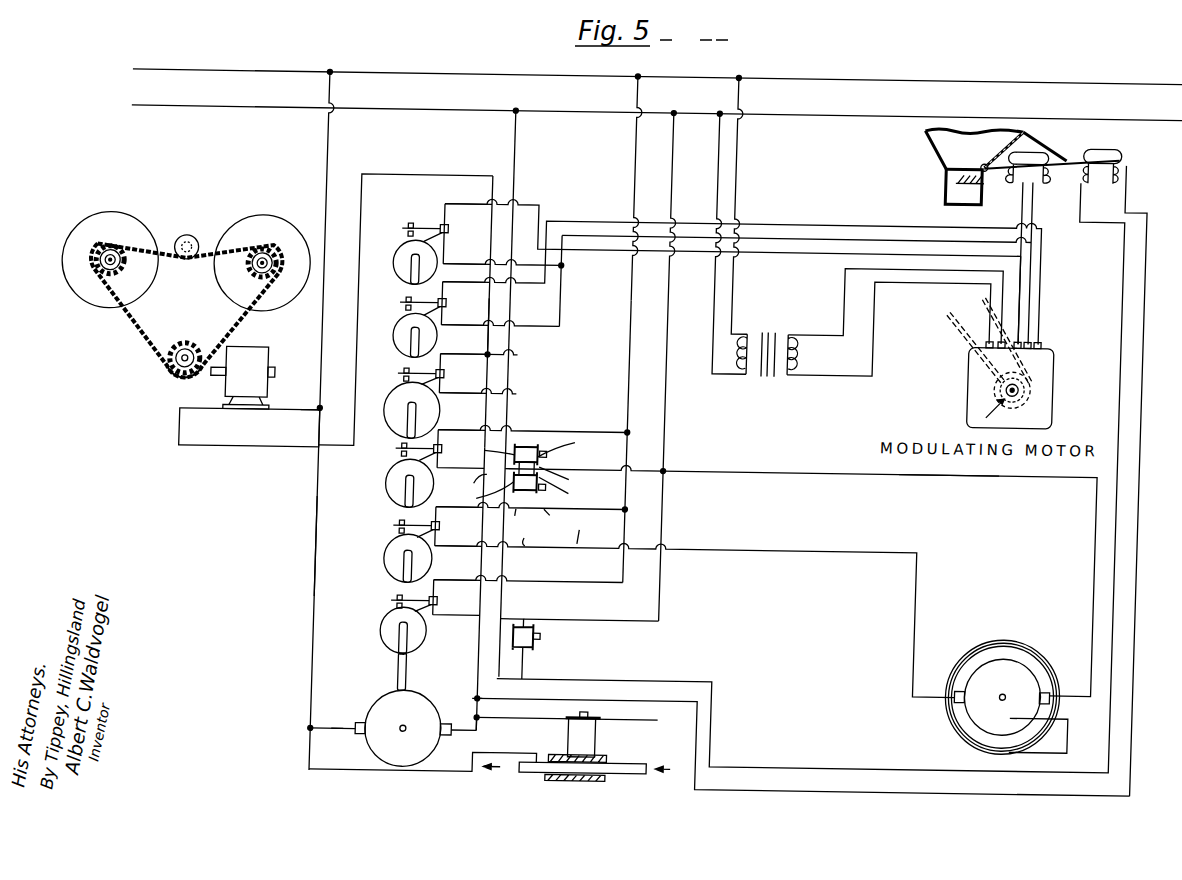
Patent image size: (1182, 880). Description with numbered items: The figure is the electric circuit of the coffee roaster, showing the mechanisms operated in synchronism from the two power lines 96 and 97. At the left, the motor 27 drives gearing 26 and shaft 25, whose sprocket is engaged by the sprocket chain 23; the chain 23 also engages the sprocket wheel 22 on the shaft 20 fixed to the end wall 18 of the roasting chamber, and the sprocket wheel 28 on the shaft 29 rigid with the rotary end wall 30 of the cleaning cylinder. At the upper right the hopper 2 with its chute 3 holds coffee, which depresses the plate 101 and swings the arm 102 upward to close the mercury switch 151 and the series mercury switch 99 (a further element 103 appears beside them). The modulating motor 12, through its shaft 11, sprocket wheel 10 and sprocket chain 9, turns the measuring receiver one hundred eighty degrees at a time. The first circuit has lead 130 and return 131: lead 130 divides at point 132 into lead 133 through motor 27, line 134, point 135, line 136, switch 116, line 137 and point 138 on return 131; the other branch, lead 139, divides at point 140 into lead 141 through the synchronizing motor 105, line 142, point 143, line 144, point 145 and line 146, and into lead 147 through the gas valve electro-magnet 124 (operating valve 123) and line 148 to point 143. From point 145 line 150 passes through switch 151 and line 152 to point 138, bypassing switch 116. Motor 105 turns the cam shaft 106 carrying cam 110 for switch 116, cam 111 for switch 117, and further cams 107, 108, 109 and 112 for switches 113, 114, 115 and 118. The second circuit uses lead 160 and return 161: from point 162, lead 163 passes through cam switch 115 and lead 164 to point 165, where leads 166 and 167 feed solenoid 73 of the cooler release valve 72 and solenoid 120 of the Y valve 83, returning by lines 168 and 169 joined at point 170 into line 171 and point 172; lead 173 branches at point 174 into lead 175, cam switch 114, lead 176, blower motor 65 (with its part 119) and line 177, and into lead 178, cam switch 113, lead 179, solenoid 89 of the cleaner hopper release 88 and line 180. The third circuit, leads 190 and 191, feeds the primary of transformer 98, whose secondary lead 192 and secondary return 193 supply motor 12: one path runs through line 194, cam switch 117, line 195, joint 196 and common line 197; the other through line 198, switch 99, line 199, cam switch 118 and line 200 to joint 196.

The hopper 2 is at (925, 138).
The chute 3 is at (944, 188).
The sprocket chain 9 is at (954, 326).
The sprocket wheel 10 is at (1005, 372).
The shaft 11 is at (992, 413).
The modulating motor 12 is at (1052, 381).
The end wall 18 is at (292, 292).
The shaft 20 is at (266, 255).
The sprocket wheel 22 is at (256, 272).
The sprocket chain 23 is at (244, 318).
The shaft 25 is at (168, 362).
The gearing 26 is at (180, 372).
The motor 27 is at (262, 358).
The sprocket wheel 28 is at (123, 268).
The shaft 29 is at (100, 270).
The rotary end wall 30 is at (68, 268).
The blower motor 65 is at (1018, 658).
The valve 72 is at (545, 442).
The solenoid 73 is at (523, 444).
The Y valve 83 is at (545, 485).
The release 88 is at (548, 639).
The solenoid 89 is at (527, 652).
The power line 96 is at (278, 72).
The power line 97 is at (287, 107).
The transformer 98 is at (768, 376).
The mercury switch 99 is at (1046, 146).
The plate 101 is at (960, 174).
The arm 102 is at (992, 172).
The solenoid 103 is at (1040, 178).
The motor 105 is at (386, 707).
The cam shaft 106 is at (416, 673).
The relay 107 is at (390, 635).
The relay 108 is at (391, 562).
The relay 109 is at (392, 485).
The cam 110 is at (390, 390).
The cam 111 is at (392, 325).
The relay 112 is at (392, 262).
The cam switch 113 is at (398, 602).
The cam switch 114 is at (398, 527).
The cam switch 115 is at (398, 452).
The switch 116 is at (400, 373).
The cam switch 117 is at (398, 302).
The cam switch 118 is at (408, 225).
The motor armature 119 is at (1040, 683).
The solenoid 120 is at (557, 518).
The valve 123 is at (610, 780).
The electro-magnet 124 is at (606, 735).
The lead 130 is at (324, 160).
The return 131 is at (518, 135).
The point 132 is at (322, 407).
The lead 133 is at (297, 411).
The line 134 is at (406, 176).
The point 135 is at (510, 355).
The line 136 is at (483, 347).
The line 137 is at (482, 390).
The point 138 is at (512, 394).
The lead 139 is at (316, 545).
The point 140 is at (312, 729).
The lead 141 is at (342, 734).
The line 142 is at (458, 736).
The point 143 is at (482, 724).
The line 144 is at (488, 718).
The point 145 is at (474, 700).
The line 146 is at (480, 642).
The lead 147 is at (312, 771).
The line 148 is at (556, 704).
The line 150 is at (616, 694).
The mercury switch 151 is at (1105, 143).
The line 152 is at (522, 676).
The lead 160 is at (634, 172).
The return 161 is at (673, 180).
The point 162 is at (628, 428).
The lead 163 is at (606, 428).
The lead 164 is at (467, 485).
The point 165 is at (480, 496).
The lead 166 is at (488, 454).
The lead 167 is at (520, 518).
The line 168 is at (566, 445).
The line 169 is at (568, 491).
The point 170 is at (567, 478).
The line 171 is at (594, 470).
The point 172 is at (668, 471).
The lead 173 is at (628, 485).
The point 174 is at (630, 512).
The lead 175 is at (592, 530).
The lead 176 is at (538, 539).
The line 177 is at (944, 474).
The lead 178 is at (613, 580).
The lead 179 is at (503, 618).
The line 180 is at (547, 618).
The lead 190 is at (720, 150).
The return 191 is at (741, 148).
The secondary lead 192 is at (822, 363).
The secondary return line 193 is at (822, 339).
The line 194 is at (604, 222).
The line 195 is at (528, 325).
The joint 196 is at (566, 267).
The line 197 is at (688, 250).
The line 198 is at (1025, 332).
The line 199 is at (524, 206).
The line 200 is at (478, 264).